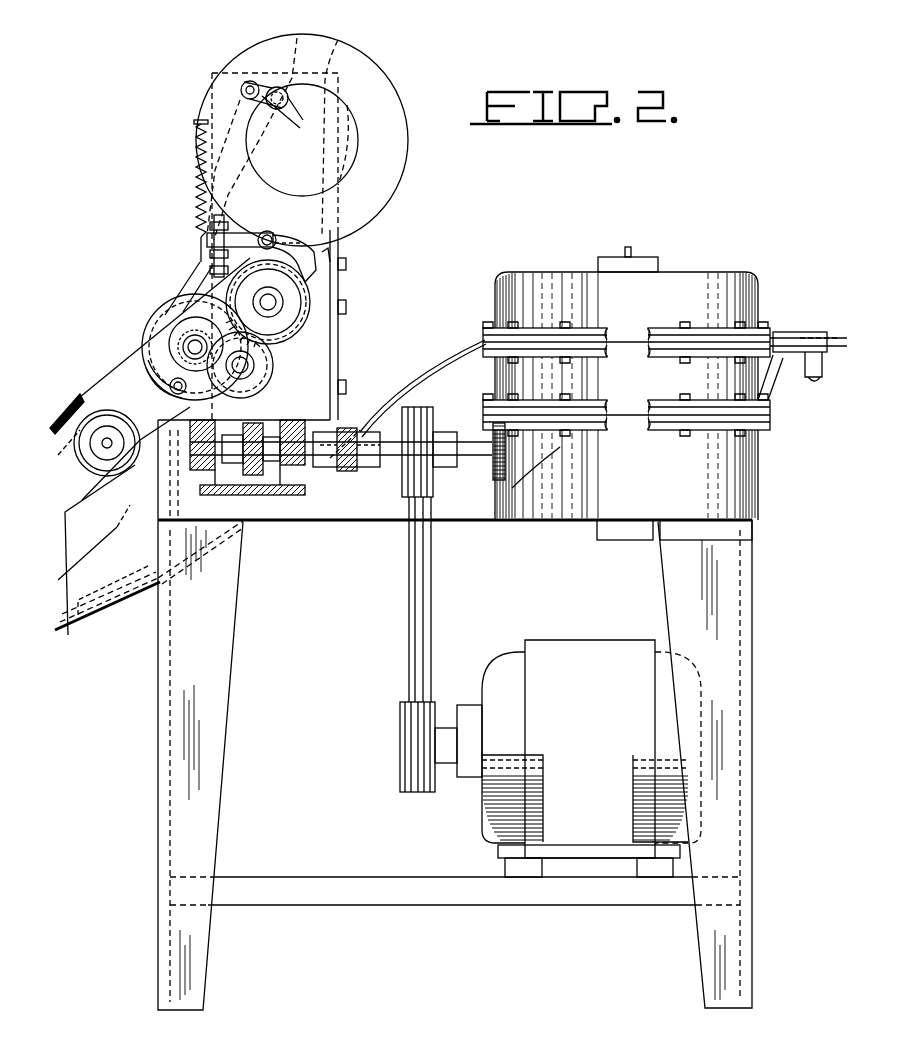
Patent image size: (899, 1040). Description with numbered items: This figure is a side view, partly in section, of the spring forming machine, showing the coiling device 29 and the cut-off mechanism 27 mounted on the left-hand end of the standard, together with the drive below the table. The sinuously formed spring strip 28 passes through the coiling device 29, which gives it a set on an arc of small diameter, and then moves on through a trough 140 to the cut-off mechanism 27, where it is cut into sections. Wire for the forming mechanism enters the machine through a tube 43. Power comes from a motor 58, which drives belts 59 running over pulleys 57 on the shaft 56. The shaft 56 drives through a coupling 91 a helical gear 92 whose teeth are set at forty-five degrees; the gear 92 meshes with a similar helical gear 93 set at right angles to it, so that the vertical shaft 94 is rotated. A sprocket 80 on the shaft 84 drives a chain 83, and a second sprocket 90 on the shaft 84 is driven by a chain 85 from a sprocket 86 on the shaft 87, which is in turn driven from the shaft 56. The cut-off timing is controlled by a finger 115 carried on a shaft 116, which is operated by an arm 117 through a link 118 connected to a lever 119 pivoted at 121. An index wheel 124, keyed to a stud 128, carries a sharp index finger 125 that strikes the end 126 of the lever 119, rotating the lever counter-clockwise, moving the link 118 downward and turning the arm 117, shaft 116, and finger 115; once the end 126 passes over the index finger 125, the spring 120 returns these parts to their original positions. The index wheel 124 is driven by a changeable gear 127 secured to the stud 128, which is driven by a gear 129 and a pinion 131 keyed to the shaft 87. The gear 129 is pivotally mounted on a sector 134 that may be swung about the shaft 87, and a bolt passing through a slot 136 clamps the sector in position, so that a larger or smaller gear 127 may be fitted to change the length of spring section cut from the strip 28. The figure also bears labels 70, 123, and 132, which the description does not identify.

The cut-off mechanism 27 is at (330, 293).
The tube 43 is at (795, 336).
The motor 58 is at (598, 716).
The belts 59 is at (412, 655).
The pulleys 57 is at (433, 407).
The vertical shaft 94 is at (255, 425).
The shaft 56 is at (478, 458).
The coupling 91 is at (352, 466).
The helical gear 93 is at (220, 482).
The helical gear 92 is at (258, 480).
The sinuously formed spring strip 28 is at (414, 376).
The shaft 116 is at (302, 127).
The finger 115 is at (349, 126).
The link 118 is at (174, 178).
The spring 120 is at (198, 194).
The arm 117 is at (252, 72).
The pivot 121 is at (267, 236).
The lever 119 is at (308, 252).
The index finger 125 is at (215, 258).
The end of lever 126 is at (332, 260).
The plate member 123 is at (335, 310).
The index wheel 124 is at (300, 322).
The stud 128 is at (280, 292).
The changeable gear 127 is at (278, 338).
The sprocket 86 is at (177, 330).
The slot 136 is at (165, 335).
The pinion 131 is at (202, 340).
The shaft 87 is at (188, 332).
The trough 140 is at (148, 354).
The cam 132 is at (181, 379).
The chain 85 is at (108, 404).
The gear 129 is at (250, 386).
The sprocket 80 is at (96, 446).
The shaft 84 is at (107, 440).
The second sprocket 90 is at (97, 466).
The sector 134 is at (190, 435).
The chain 83 is at (104, 550).
The tape strip 70 is at (132, 602).
The coiling device 29 is at (84, 638).